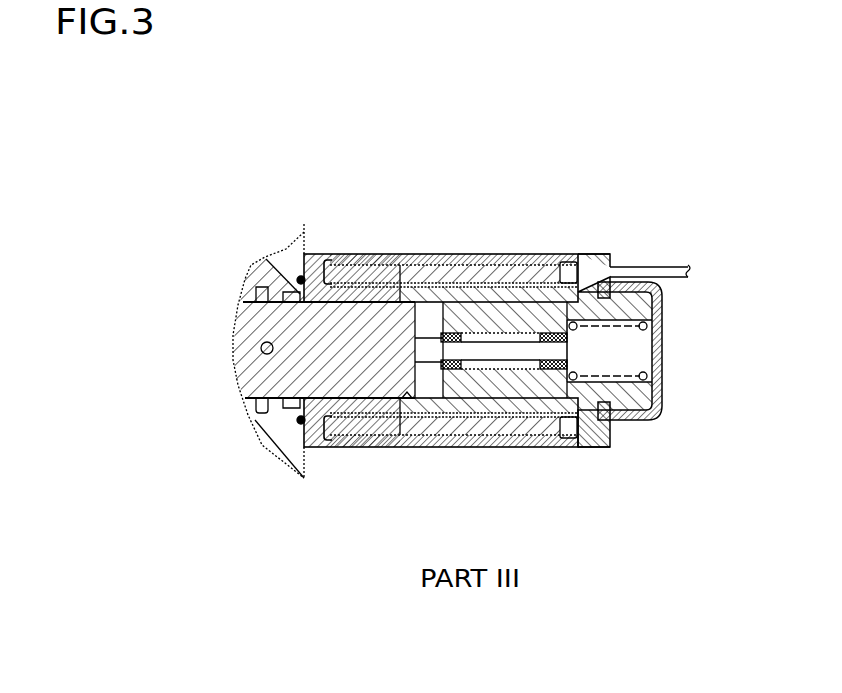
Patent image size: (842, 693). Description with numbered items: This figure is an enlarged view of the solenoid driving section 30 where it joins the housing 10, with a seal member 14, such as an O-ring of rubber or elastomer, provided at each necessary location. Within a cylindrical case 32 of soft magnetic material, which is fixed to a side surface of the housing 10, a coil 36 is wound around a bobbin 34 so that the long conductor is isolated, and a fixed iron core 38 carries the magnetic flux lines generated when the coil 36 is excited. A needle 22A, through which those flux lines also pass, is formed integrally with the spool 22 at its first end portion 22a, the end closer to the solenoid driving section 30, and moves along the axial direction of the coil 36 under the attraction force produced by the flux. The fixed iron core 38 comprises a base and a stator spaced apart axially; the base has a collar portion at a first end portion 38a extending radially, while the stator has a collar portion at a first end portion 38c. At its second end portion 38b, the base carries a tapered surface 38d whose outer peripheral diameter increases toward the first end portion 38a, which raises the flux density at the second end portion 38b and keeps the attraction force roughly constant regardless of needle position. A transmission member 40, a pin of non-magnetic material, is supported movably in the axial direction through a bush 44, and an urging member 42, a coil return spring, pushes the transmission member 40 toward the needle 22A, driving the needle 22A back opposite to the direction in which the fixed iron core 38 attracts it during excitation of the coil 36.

The housing 10 is at (280, 260).
The seal member 14 is at (286, 428).
The spool 22 is at (247, 347).
The needle 22A is at (345, 417).
The first end portion 22a is at (406, 400).
The solenoid driving section 30 is at (650, 231).
The case 32 is at (574, 258).
The bobbin 34 is at (450, 290).
The coil 36 is at (430, 272).
The fixed iron core 38 is at (349, 258).
The first end portion 38a is at (591, 257).
The second end portion 38b is at (371, 278).
The first end portion 38c is at (317, 256).
The tapered surface 38d is at (409, 284).
The transmission member 40 is at (516, 405).
The urging member 42 is at (666, 330).
The bush 44 is at (455, 420).